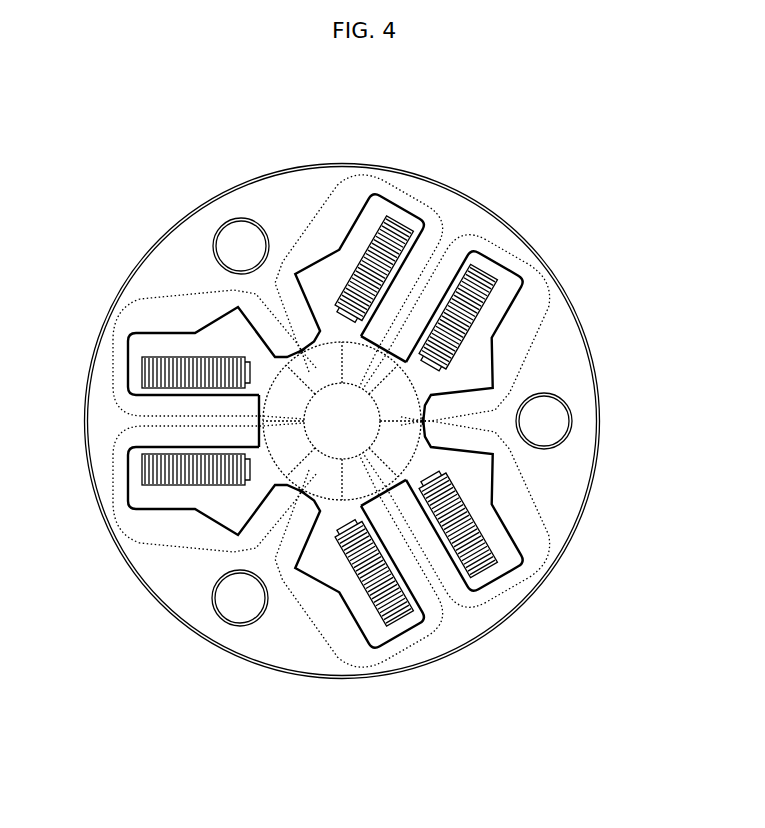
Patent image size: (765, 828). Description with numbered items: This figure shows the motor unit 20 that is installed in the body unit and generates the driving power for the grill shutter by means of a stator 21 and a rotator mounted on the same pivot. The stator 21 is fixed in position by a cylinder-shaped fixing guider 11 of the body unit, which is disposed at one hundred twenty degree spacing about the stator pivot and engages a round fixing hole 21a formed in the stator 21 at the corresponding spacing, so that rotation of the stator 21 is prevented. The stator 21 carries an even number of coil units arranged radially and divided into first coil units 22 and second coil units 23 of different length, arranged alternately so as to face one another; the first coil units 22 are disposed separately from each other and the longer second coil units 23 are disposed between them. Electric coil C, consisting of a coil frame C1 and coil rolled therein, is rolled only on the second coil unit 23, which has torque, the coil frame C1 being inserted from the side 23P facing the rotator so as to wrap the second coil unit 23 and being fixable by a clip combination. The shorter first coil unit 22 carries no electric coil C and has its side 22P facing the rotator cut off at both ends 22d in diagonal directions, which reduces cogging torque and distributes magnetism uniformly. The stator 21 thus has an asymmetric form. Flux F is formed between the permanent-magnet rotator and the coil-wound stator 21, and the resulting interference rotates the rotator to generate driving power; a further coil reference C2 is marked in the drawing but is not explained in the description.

The motor unit 20 is at (351, 70).
The stator 21 is at (566, 477).
The fixing hole 21a is at (217, 224).
The fixing guider 11 is at (563, 413).
The first coil unit 22 is at (300, 492).
The side facing the rotator 22P is at (307, 272).
The both ends 22d is at (297, 552).
The second coil unit 23 is at (400, 497).
The side facing the rotator 23P is at (447, 572).
The electric coil C is at (362, 618).
The coil frame C1 is at (398, 215).
The second coil C2 is at (376, 228).
The flux F is at (137, 310).